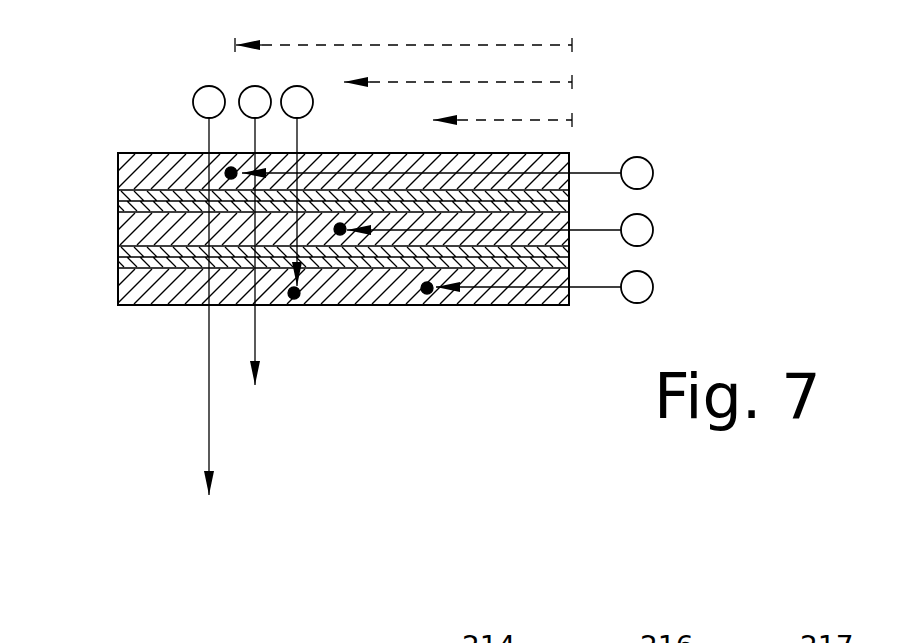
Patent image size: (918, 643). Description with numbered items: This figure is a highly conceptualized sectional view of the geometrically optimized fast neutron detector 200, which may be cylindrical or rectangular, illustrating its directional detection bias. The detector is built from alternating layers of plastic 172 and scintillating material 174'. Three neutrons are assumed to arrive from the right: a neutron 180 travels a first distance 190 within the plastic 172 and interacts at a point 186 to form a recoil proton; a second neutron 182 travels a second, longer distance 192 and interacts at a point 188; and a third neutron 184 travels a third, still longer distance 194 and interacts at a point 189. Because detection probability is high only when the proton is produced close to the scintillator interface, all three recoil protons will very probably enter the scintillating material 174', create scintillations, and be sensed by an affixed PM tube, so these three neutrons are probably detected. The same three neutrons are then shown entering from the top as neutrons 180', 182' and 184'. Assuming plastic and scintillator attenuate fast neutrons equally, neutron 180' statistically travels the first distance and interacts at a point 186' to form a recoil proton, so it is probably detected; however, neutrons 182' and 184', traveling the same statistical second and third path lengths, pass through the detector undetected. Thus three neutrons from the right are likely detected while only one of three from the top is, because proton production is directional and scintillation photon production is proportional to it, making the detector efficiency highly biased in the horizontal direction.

The plastic 172 is at (118, 287).
The scintillating material 174' is at (420, 233).
The neutron 180 is at (582, 288).
The neutron 180' is at (284, 171).
The second neutron 182 is at (537, 230).
The neutron 182' is at (227, 221).
The third neutron 184 is at (485, 173).
The neutron 184' is at (169, 276).
The point 186 is at (450, 330).
The point 186' is at (307, 333).
The point 188 is at (342, 235).
The point 189 is at (231, 168).
The distance l1 190 is at (520, 123).
The distance l2 192 is at (520, 85).
The distance l3 194 is at (520, 47).
The detector 200 is at (518, 327).